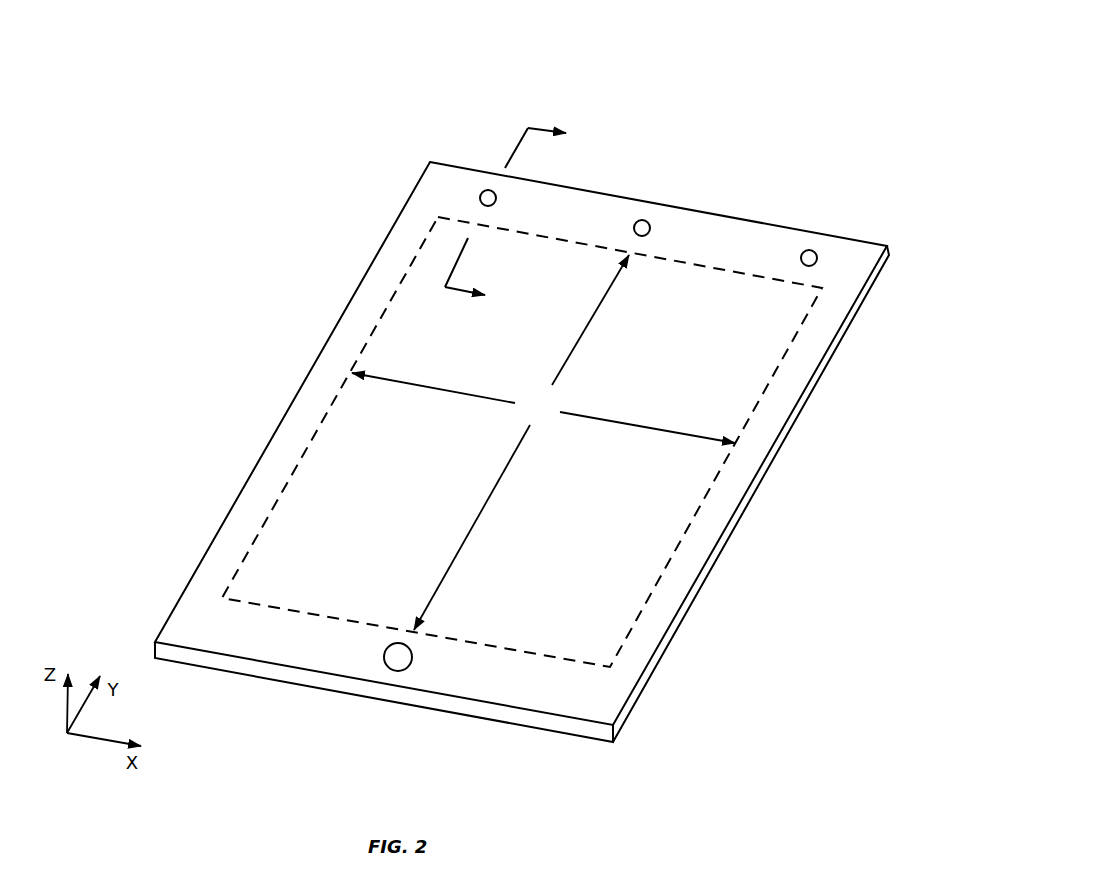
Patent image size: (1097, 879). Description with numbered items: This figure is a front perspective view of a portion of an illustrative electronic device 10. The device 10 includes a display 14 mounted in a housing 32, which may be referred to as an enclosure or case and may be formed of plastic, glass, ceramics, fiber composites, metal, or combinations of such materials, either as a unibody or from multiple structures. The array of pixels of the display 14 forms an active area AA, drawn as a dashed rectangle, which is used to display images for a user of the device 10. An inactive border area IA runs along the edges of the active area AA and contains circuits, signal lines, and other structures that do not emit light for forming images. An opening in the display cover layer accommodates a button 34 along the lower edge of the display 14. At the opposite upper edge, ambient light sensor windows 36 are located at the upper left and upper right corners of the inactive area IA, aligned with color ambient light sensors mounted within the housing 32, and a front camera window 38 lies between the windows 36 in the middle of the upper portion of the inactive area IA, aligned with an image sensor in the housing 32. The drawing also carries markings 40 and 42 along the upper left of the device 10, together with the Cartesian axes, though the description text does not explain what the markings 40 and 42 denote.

The electronic device 10 is at (558, 382).
The display 14 is at (570, 442).
The housing 32 is at (890, 252).
The button 34 is at (398, 670).
The ambient light sensor windows 36 is at (481, 192).
The front camera window 38 is at (645, 220).
The inactive area region 40 is at (451, 213).
The direction arrow 42 is at (540, 128).
The active area AA is at (522, 442).
The inactive border area IA is at (727, 235).